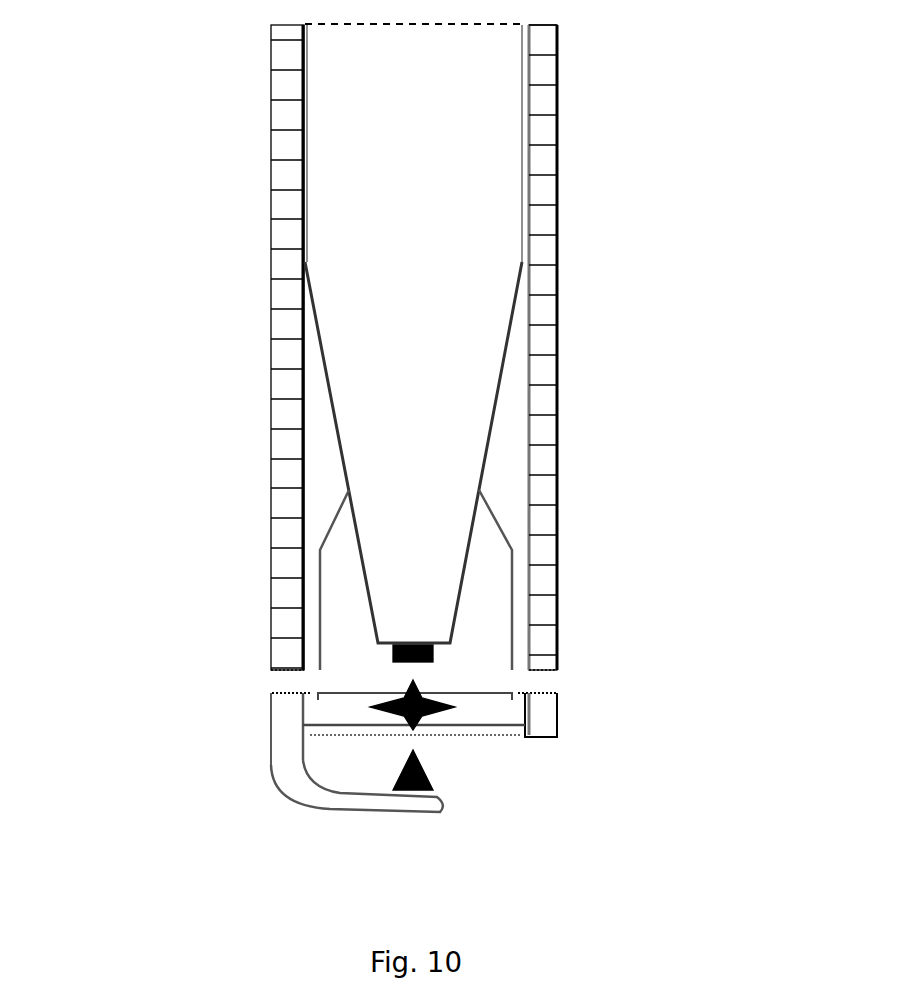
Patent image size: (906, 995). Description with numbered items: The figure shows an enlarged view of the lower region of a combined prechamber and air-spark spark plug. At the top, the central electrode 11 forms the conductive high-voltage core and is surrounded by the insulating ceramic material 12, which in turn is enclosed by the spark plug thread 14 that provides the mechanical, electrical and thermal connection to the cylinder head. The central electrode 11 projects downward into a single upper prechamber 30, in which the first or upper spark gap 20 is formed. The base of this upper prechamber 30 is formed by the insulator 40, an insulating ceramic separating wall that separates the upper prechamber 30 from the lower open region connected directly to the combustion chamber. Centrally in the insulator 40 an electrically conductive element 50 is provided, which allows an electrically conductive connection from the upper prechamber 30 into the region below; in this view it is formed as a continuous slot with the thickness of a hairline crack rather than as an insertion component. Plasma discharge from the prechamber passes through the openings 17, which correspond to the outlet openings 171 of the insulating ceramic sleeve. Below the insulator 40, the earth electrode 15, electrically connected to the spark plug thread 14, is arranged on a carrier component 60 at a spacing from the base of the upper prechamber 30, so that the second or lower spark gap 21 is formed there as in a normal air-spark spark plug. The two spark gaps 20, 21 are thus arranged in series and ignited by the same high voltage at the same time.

The central electrode 11 is at (393, 662).
The insulating ceramic material 12 is at (348, 190).
The spark plug thread 14 is at (553, 190).
The earth electrode 15 is at (443, 782).
The openings 17 is at (562, 686).
The outlet openings of insulating ceramic sleeve 171 is at (313, 683).
The upper spark gap 20 is at (423, 678).
The lower spark gap 21 is at (423, 745).
The upper prechamber 30 is at (348, 597).
The insulator 40 is at (475, 710).
The electrically conductive element 50 is at (377, 718).
The carrier component 60 is at (307, 797).